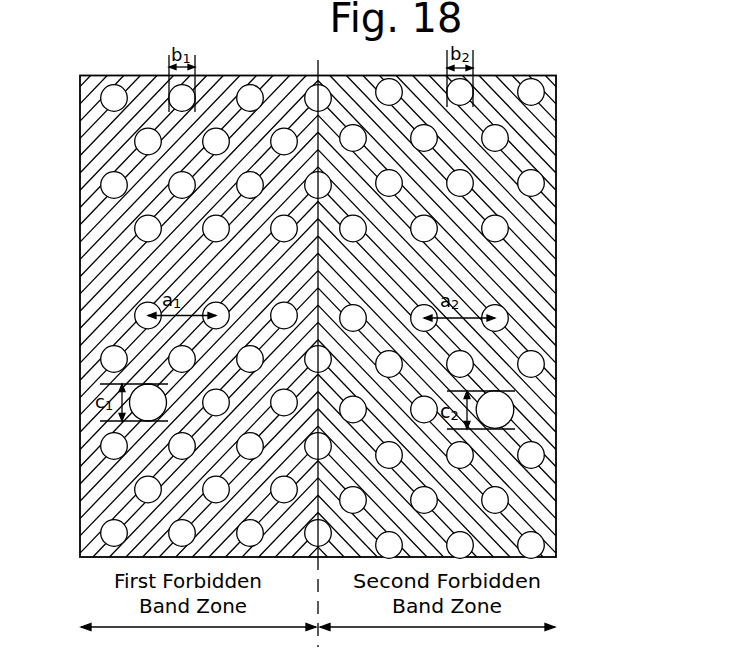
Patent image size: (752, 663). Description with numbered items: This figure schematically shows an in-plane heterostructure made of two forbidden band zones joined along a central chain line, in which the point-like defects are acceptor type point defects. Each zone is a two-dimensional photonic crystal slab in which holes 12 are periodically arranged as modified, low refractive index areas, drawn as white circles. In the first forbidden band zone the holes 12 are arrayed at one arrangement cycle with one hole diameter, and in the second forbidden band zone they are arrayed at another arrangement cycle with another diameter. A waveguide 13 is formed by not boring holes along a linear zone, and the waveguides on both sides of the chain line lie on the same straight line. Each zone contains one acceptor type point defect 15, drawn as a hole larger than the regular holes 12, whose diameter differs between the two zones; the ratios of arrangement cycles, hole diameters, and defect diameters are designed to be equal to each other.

The holes 12 is at (545, 277).
The waveguide 13 is at (544, 183).
The defect hole 15 is at (492, 404).